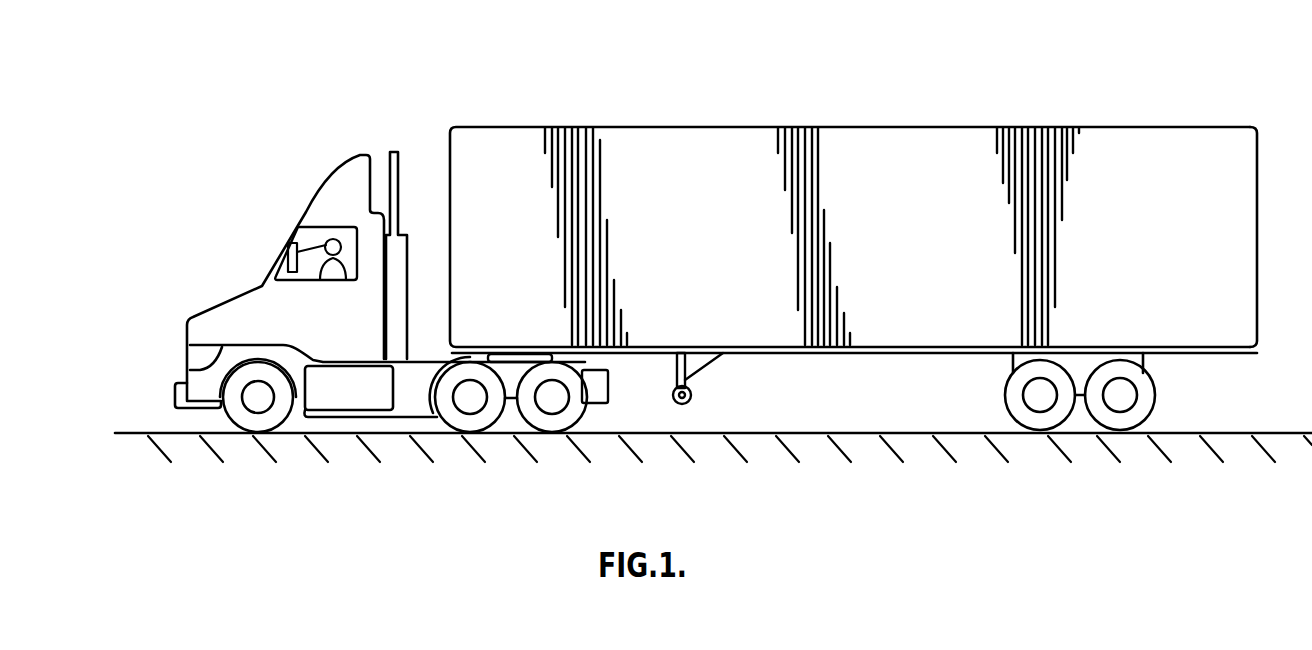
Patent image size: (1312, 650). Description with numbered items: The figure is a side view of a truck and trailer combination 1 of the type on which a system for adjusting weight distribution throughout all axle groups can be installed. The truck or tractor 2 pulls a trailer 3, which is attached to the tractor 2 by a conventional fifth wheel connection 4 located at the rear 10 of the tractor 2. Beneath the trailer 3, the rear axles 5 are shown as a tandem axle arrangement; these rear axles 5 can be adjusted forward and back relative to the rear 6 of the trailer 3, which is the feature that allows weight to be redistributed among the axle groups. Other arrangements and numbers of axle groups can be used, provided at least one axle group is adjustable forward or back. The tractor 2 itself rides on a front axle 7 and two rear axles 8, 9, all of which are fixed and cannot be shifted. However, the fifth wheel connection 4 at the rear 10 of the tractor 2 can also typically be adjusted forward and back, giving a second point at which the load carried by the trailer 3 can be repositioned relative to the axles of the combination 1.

The truck and trailer combination 1 is at (648, 96).
The tractor 2 is at (217, 302).
The trailer 3 is at (817, 127).
The fifth wheel connection 4 is at (518, 358).
The rear axles 5 is at (1030, 447).
The rear of trailer 6 is at (1261, 195).
The front axle 7 is at (241, 437).
The rear axle 8 is at (501, 437).
The rear axle 9 is at (553, 437).
The rear of truck 10 is at (608, 390).